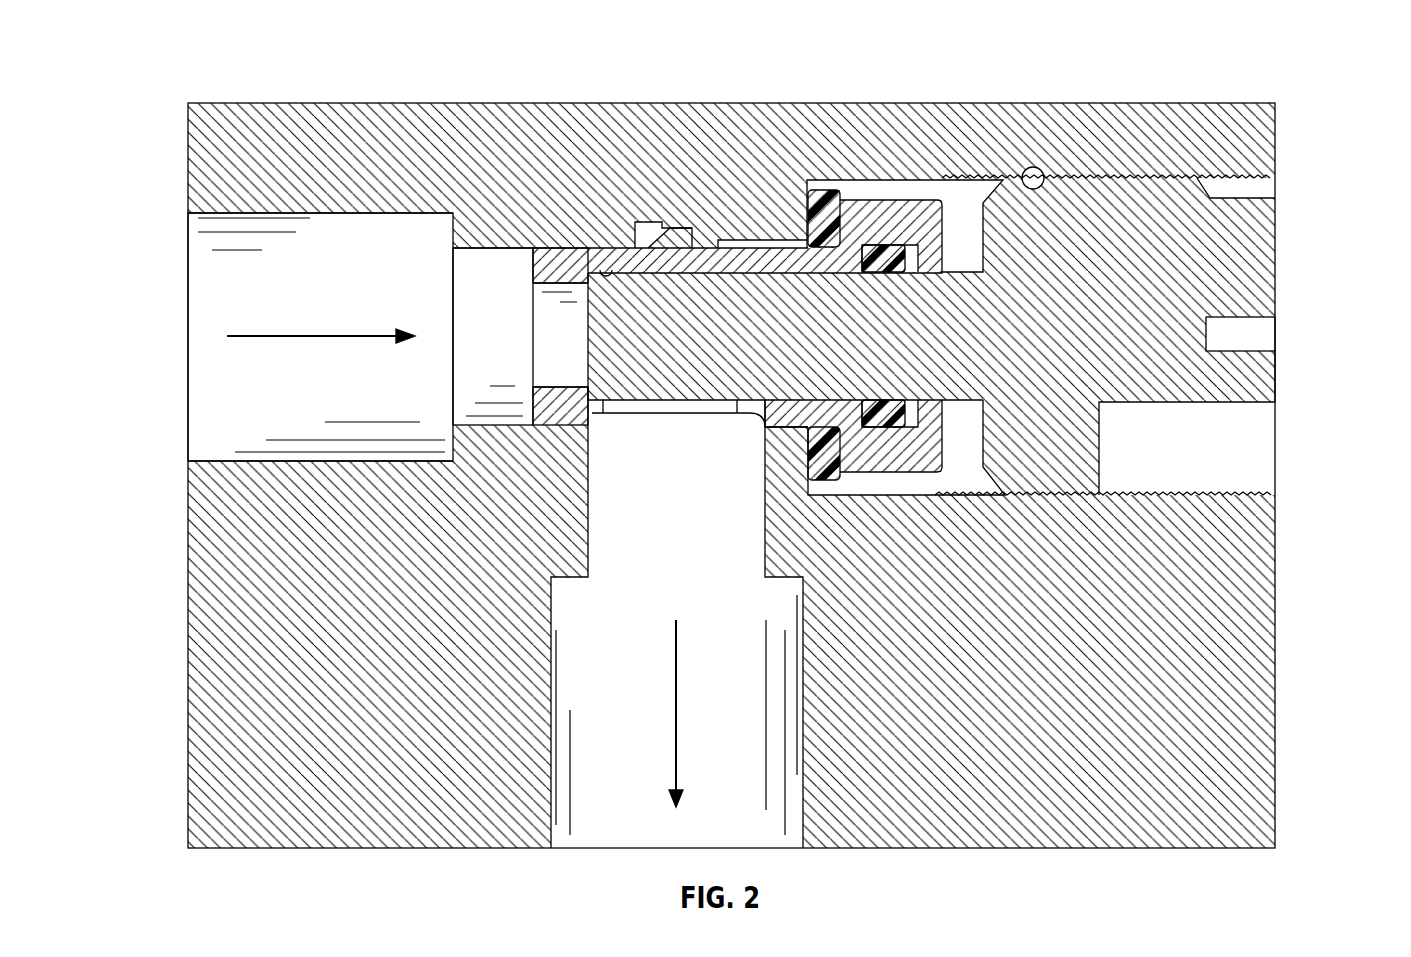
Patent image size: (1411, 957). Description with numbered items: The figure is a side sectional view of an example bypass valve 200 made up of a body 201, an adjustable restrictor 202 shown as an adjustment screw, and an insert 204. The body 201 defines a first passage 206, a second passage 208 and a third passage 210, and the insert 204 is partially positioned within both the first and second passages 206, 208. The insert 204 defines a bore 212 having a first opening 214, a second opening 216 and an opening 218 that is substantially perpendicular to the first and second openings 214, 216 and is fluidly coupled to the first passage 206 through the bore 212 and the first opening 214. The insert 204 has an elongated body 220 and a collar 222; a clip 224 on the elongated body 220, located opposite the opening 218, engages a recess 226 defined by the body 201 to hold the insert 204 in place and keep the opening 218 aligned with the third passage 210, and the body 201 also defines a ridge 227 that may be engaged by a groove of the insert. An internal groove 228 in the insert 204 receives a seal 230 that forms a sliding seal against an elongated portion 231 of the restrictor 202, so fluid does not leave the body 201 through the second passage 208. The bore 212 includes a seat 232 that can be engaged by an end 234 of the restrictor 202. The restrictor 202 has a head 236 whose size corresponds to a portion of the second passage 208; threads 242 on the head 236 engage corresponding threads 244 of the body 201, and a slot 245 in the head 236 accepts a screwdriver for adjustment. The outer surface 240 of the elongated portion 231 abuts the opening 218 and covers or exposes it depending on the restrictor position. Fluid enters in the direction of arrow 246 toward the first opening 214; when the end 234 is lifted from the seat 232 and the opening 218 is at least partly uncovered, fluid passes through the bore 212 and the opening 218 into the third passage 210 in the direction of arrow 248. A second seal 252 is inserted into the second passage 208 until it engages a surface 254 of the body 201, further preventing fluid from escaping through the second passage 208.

The bypass valve 200 is at (230, 78).
The body 201 is at (268, 522).
The adjustable restrictor 202 is at (1165, 382).
The insert 204 is at (700, 260).
The first passage 206 is at (360, 225).
The second passage 208 is at (957, 225).
The third passage 210 is at (620, 828).
The bore 212 is at (604, 270).
The first opening 214 is at (530, 296).
The second opening 216 is at (960, 403).
The opening 218 is at (655, 414).
The elongated body 220 is at (740, 260).
The collar 222 is at (888, 212).
The clip 224 is at (672, 232).
The recess 226 is at (657, 232).
The ridge 227 is at (806, 246).
The internal groove 228 is at (912, 423).
The seal 230 is at (884, 428).
The elongated portion 231 is at (718, 341).
The seat 232 is at (592, 396).
The end 234 is at (588, 363).
The head 236 is at (1253, 377).
The outer surface 240 is at (707, 408).
The threads 242 is at (1162, 177).
The threads 244 is at (1032, 167).
The slot 245 is at (1258, 333).
The arrow 246 is at (296, 338).
The arrow 248 is at (676, 645).
The second seal 252 is at (822, 482).
The surface 254 is at (805, 448).